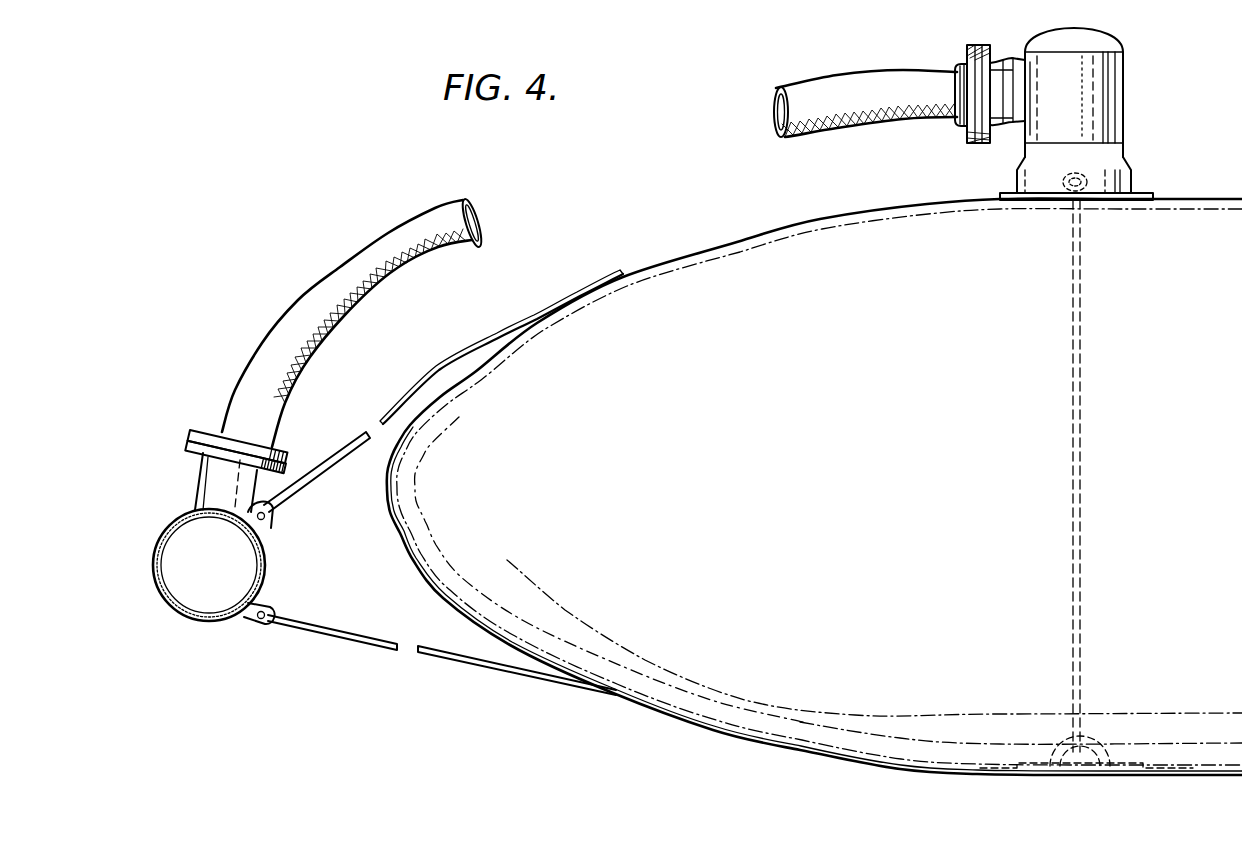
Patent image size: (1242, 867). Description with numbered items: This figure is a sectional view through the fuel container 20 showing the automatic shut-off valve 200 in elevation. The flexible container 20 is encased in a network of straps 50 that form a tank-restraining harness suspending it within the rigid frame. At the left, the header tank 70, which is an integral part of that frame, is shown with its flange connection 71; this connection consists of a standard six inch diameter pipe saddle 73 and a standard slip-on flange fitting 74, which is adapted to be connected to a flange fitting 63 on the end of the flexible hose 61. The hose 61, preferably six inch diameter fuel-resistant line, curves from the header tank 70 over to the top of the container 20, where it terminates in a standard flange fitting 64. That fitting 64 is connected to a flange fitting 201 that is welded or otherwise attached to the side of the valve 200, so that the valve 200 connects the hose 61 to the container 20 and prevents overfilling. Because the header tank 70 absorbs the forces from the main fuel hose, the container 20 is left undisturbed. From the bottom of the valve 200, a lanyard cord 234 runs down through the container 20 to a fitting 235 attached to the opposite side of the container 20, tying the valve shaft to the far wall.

The container 20 is at (736, 258).
The straps 50 is at (357, 442).
The flexible hose 61 is at (460, 220).
The flange fitting 63 is at (279, 452).
The flange fitting 64 is at (968, 133).
The header tank 70 is at (212, 602).
The flange connection 71 is at (212, 486).
The pipe saddle 73 is at (189, 514).
The slip-on flange fitting 74 is at (190, 449).
The automatic shut-off valve 200 is at (1110, 103).
The flange fitting 201 is at (990, 51).
The lanyard cord 234 is at (1082, 542).
The fitting 235 is at (1107, 746).